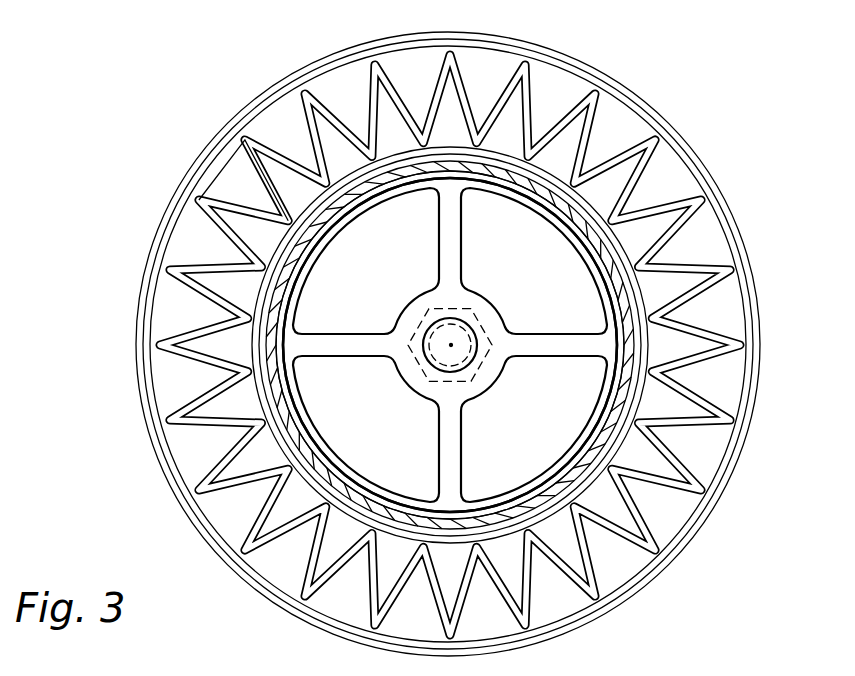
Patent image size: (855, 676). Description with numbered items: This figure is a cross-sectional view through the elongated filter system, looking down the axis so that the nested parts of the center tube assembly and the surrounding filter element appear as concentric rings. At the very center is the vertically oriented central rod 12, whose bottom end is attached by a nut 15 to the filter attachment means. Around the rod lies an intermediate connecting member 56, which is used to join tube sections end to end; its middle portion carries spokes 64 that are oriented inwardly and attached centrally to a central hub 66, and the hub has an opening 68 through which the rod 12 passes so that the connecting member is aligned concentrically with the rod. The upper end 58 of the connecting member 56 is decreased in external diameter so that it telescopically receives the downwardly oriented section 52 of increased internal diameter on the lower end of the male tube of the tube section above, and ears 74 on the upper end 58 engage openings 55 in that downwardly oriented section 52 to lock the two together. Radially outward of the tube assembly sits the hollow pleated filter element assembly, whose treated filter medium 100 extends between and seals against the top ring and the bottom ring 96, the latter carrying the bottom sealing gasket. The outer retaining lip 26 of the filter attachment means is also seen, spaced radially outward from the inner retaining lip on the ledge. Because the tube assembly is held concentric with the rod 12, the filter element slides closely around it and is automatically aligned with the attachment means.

The central rod 12 is at (455, 340).
The nut 15 is at (490, 363).
The outer retaining lip 26 is at (580, 93).
The downwardly oriented section 52 is at (585, 210).
The openings 55 is at (277, 383).
The intermediate connecting member 56 is at (328, 235).
The upper end 58 is at (392, 502).
The spokes 64 is at (333, 345).
The central hub 66 is at (497, 330).
The opening 68 is at (440, 375).
The ears 74 is at (262, 343).
The bottom ring 96 is at (280, 87).
The treated filter medium 100 is at (250, 155).